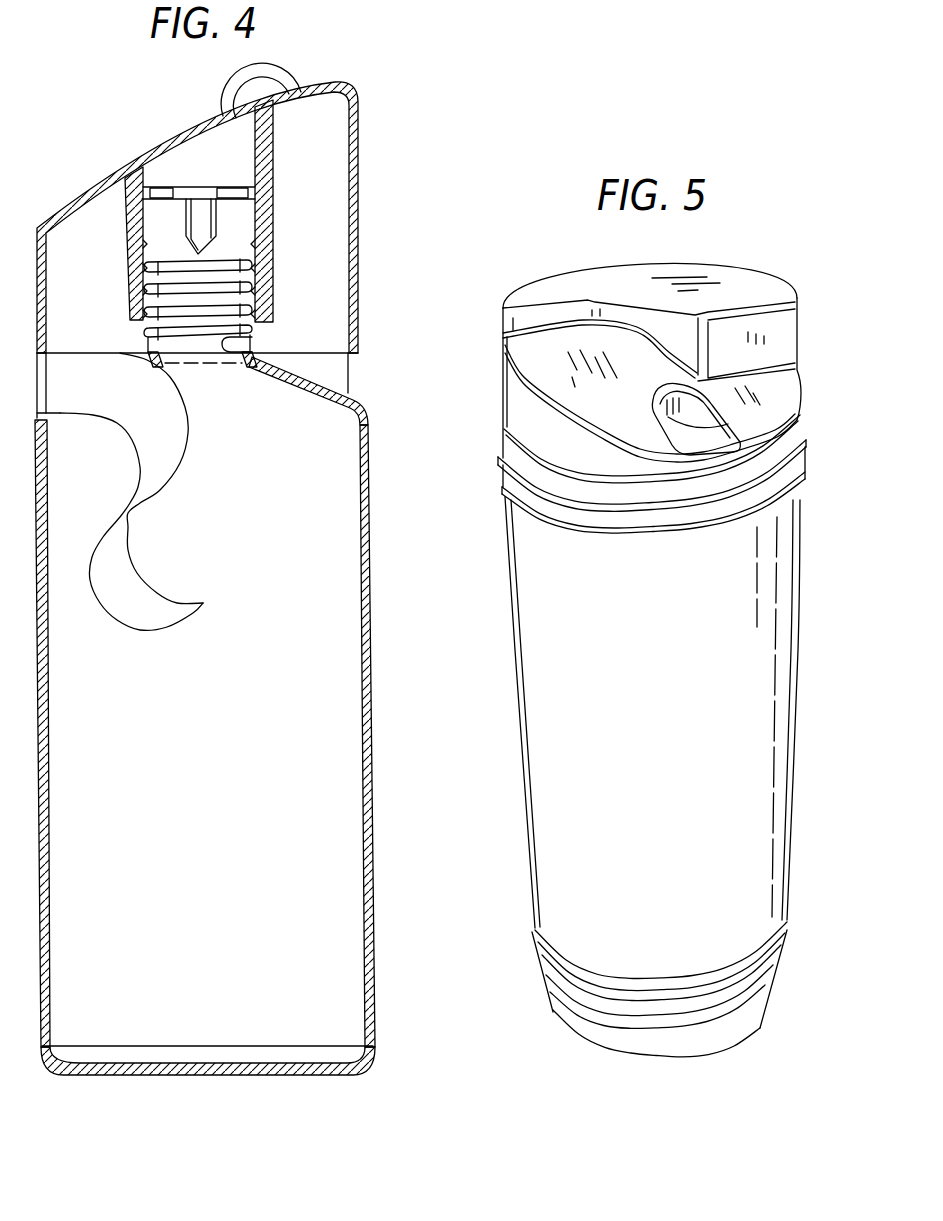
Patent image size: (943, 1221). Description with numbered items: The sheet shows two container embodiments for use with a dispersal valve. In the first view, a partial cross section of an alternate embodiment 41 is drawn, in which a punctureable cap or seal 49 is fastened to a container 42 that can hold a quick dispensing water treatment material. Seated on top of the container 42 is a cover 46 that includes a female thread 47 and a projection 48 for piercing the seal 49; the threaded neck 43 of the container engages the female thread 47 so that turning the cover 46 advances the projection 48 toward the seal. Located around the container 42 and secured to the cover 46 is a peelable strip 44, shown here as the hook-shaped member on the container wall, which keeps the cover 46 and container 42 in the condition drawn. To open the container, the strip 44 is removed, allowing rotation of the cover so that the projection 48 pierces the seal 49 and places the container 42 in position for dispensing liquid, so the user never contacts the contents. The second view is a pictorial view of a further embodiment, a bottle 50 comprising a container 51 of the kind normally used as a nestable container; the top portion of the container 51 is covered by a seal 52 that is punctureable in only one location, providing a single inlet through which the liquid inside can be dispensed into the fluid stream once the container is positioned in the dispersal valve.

In FIG. 4, the alternate embodiment 41 is at (376, 454).
In FIG. 4, the container 42 is at (363, 571).
In FIG. 4, the threaded neck 43 is at (218, 312).
In FIG. 4, the peelable strip 44 is at (173, 450).
In FIG. 4, the cover 46 is at (353, 152).
In FIG. 4, the female thread 47 is at (125, 257).
In FIG. 4, the projection 48 is at (227, 207).
In FIG. 4, the punctureable cap or seal 49 is at (218, 262).
In FIG. 5, the bottle 50 is at (752, 260).
In FIG. 5, the container 51 is at (545, 737).
In FIG. 5, the seal 52 is at (563, 287).